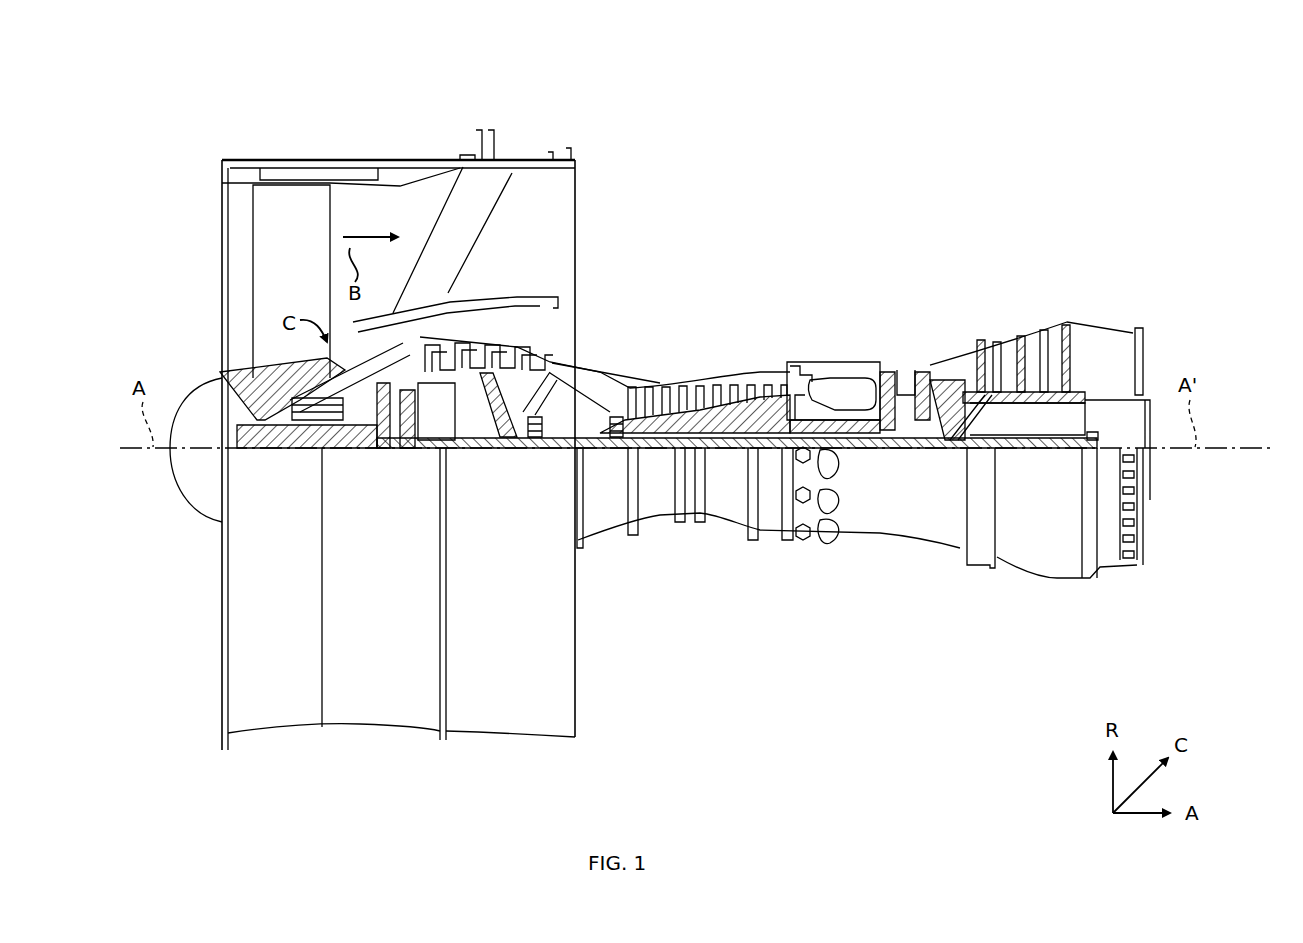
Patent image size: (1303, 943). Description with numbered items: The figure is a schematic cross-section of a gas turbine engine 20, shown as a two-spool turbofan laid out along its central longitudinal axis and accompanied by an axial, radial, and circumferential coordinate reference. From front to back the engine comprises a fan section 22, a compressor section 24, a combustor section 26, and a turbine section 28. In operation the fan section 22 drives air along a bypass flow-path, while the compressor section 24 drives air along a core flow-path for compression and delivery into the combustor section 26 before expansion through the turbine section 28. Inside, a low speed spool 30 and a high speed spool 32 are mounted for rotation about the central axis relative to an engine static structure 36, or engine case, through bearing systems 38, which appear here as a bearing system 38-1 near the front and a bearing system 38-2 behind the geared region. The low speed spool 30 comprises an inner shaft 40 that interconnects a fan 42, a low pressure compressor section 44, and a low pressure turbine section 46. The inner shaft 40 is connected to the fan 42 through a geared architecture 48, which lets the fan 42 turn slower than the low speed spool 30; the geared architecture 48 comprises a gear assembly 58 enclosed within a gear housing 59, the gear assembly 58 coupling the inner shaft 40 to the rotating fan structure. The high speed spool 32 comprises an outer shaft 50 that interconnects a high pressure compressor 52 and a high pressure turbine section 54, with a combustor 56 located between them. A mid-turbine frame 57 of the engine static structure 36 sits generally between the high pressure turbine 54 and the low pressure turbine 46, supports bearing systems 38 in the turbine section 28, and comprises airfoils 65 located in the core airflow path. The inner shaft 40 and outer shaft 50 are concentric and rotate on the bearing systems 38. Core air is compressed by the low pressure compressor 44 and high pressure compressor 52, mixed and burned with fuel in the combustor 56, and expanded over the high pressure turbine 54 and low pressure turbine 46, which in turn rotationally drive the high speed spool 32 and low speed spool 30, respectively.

The gas turbine engine 20 is at (890, 155).
The fan section 22 is at (420, 145).
The compressor section 24 is at (445, 262).
The combustor section 26 is at (888, 262).
The turbine section 28 is at (1090, 262).
The low speed spool 30 is at (735, 462).
The high speed spool 32 is at (780, 410).
The engine static structure 36 is at (192, 755).
The bearing system 38 is at (948, 448).
The bearing system 38-1 is at (300, 425).
The bearing system 38-2 is at (520, 448).
The inner shaft 40 is at (598, 448).
The fan 42 is at (291, 456).
The low pressure compressor section 44 is at (517, 352).
The low pressure turbine section 46 is at (1015, 342).
The geared architecture 48 is at (398, 478).
The outer shaft 50 is at (838, 440).
The high pressure compressor 52 is at (728, 380).
The high pressure turbine section 54 is at (905, 372).
The combustor 56 is at (845, 385).
The mid-turbine frame 57 is at (945, 350).
The gear assembly 58 is at (420, 425).
The gear housing 59 is at (420, 393).
The airfoils 65 is at (950, 380).